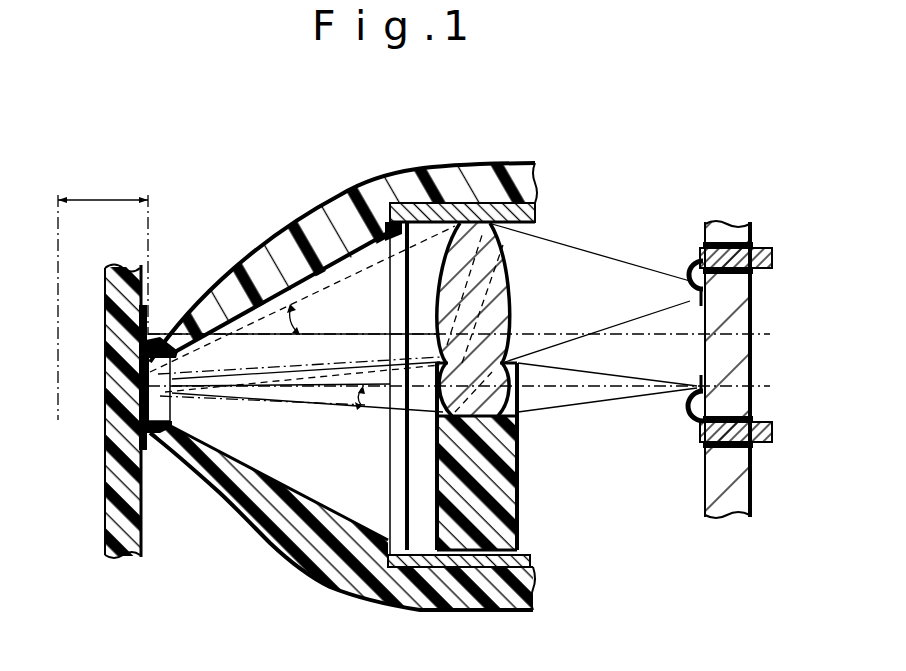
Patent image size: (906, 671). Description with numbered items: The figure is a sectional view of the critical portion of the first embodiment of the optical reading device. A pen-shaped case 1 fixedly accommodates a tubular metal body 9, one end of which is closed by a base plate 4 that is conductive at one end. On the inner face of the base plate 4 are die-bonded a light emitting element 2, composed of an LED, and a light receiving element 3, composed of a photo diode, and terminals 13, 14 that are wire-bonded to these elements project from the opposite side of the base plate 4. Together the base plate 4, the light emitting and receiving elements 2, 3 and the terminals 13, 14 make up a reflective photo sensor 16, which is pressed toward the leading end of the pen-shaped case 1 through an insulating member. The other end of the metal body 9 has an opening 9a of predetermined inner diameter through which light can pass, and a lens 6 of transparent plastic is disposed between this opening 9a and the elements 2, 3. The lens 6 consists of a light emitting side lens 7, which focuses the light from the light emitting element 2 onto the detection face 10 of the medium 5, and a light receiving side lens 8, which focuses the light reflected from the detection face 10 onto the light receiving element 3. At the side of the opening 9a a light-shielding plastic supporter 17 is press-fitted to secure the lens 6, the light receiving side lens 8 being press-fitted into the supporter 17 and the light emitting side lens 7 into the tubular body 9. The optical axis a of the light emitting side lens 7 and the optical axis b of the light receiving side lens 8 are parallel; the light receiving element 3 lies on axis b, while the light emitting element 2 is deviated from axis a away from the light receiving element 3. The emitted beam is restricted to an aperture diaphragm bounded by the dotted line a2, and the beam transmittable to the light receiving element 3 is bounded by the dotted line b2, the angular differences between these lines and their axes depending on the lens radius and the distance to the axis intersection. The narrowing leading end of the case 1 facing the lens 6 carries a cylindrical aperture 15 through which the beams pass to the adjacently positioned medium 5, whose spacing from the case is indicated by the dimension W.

The pen-shaped case 1 is at (345, 205).
The light emitting element 2 is at (690, 263).
The light receiving element 3 is at (686, 408).
The base plate 4 is at (752, 318).
The medium 5 is at (118, 554).
The lens 6 is at (512, 349).
The light emitting side lens 7 is at (497, 278).
The light receiving side lens 8 is at (503, 398).
The metal body 9 is at (455, 222).
The opening 9a is at (392, 522).
The detection face 10 is at (143, 537).
The terminal 13 is at (772, 252).
The terminal 14 is at (768, 445).
The aperture 15 is at (158, 423).
The reflective photo sensor 16 is at (757, 480).
The supporter 17 is at (493, 532).
The optical axis a is at (377, 333).
The dotted line a2 is at (250, 322).
The optical axis b is at (386, 405).
The dotted line b2 is at (296, 400).
The wall distance W is at (103, 295).